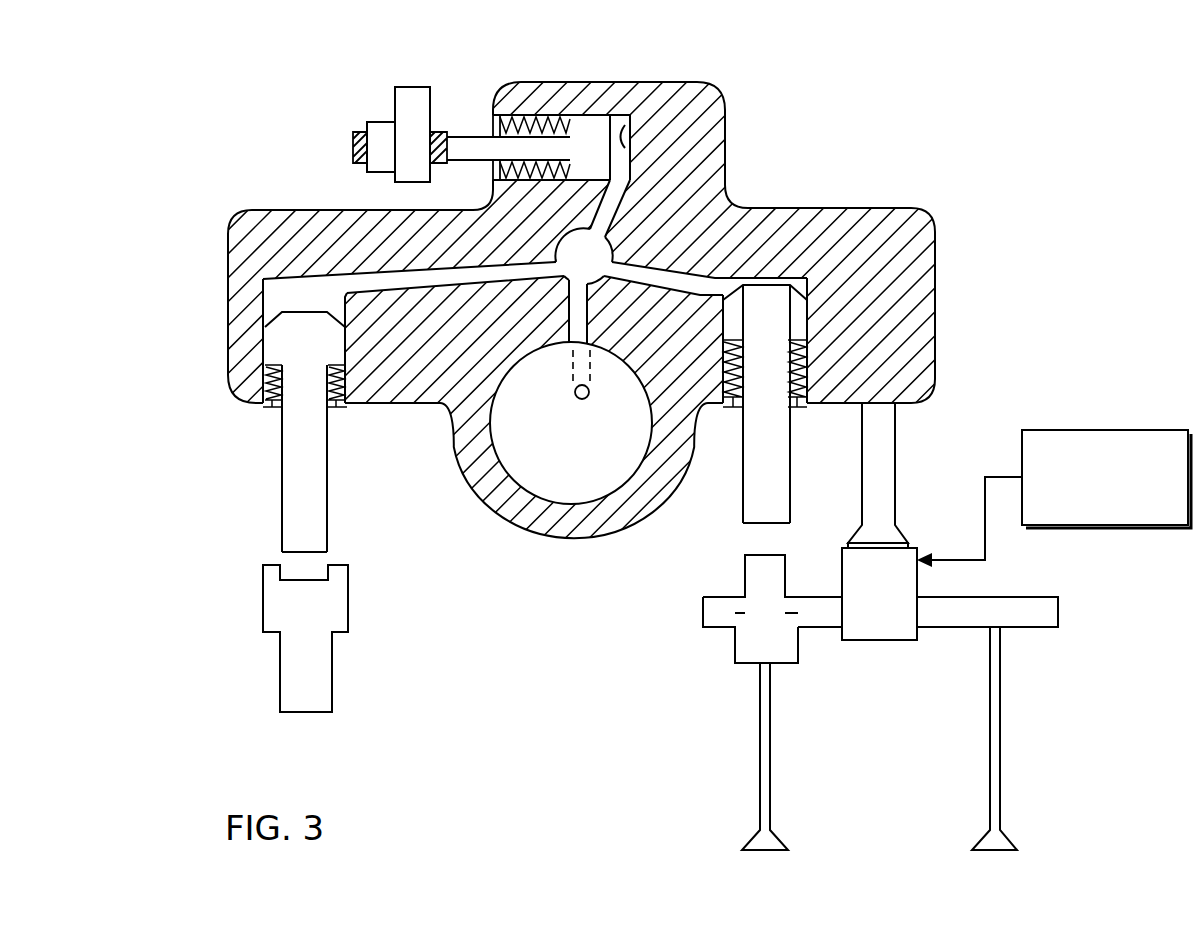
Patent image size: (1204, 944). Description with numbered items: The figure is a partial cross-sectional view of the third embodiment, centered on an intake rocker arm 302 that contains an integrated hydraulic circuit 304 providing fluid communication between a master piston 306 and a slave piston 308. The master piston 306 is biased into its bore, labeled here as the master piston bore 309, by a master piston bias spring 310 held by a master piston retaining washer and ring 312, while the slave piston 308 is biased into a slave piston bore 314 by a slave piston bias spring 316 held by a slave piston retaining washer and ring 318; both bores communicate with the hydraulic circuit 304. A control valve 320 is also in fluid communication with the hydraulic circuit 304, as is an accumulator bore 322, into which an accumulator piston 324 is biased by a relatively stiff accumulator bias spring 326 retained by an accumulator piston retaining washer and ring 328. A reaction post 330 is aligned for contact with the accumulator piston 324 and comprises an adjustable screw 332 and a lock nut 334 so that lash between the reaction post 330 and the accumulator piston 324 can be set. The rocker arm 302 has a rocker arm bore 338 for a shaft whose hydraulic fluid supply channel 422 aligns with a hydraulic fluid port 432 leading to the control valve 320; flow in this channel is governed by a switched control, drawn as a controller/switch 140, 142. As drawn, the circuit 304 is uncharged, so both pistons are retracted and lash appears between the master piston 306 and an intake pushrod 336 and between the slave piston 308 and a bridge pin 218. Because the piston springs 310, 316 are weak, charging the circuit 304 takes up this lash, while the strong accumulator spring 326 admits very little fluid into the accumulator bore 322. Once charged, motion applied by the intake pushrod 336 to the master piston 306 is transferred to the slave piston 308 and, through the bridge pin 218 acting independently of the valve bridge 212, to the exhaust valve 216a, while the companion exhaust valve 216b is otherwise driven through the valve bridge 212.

The intake rocker arm 302 is at (925, 230).
The hydraulic circuit 304 is at (495, 276).
The master piston 306 is at (281, 494).
The slave piston 308 is at (743, 515).
The first valve chamber 309 is at (275, 297).
The master piston bias spring 310 is at (274, 384).
The master piston retaining washer and ring 312 is at (335, 405).
The slave piston bore 314 is at (800, 278).
The slave piston bias spring 316 is at (733, 368).
The slave piston retaining washer and ring 318 is at (793, 404).
The control valve 320 is at (605, 273).
The accumulator bore 322 is at (652, 84).
The accumulator piston 324 is at (459, 135).
The accumulator bias spring 326 is at (540, 120).
The accumulator piston retaining washer and ring 328 is at (494, 118).
The reaction post 330 is at (352, 78).
The adjustable screw 332 is at (372, 121).
The threaded end 334 is at (353, 150).
The intake pushrod 336 is at (280, 676).
The rocker arm bore 338 is at (546, 485).
The hydraulic fluid supply channel 422 is at (583, 400).
The hydraulic fluid port 432 is at (568, 318).
The valve bridge 212 is at (1060, 612).
The bridge pin 218 is at (735, 658).
The exhaust valve 216a is at (770, 773).
The exhaust valve 216b is at (1000, 773).
The controller 140 is at (1054, 474).
The switch 142 is at (1100, 430).